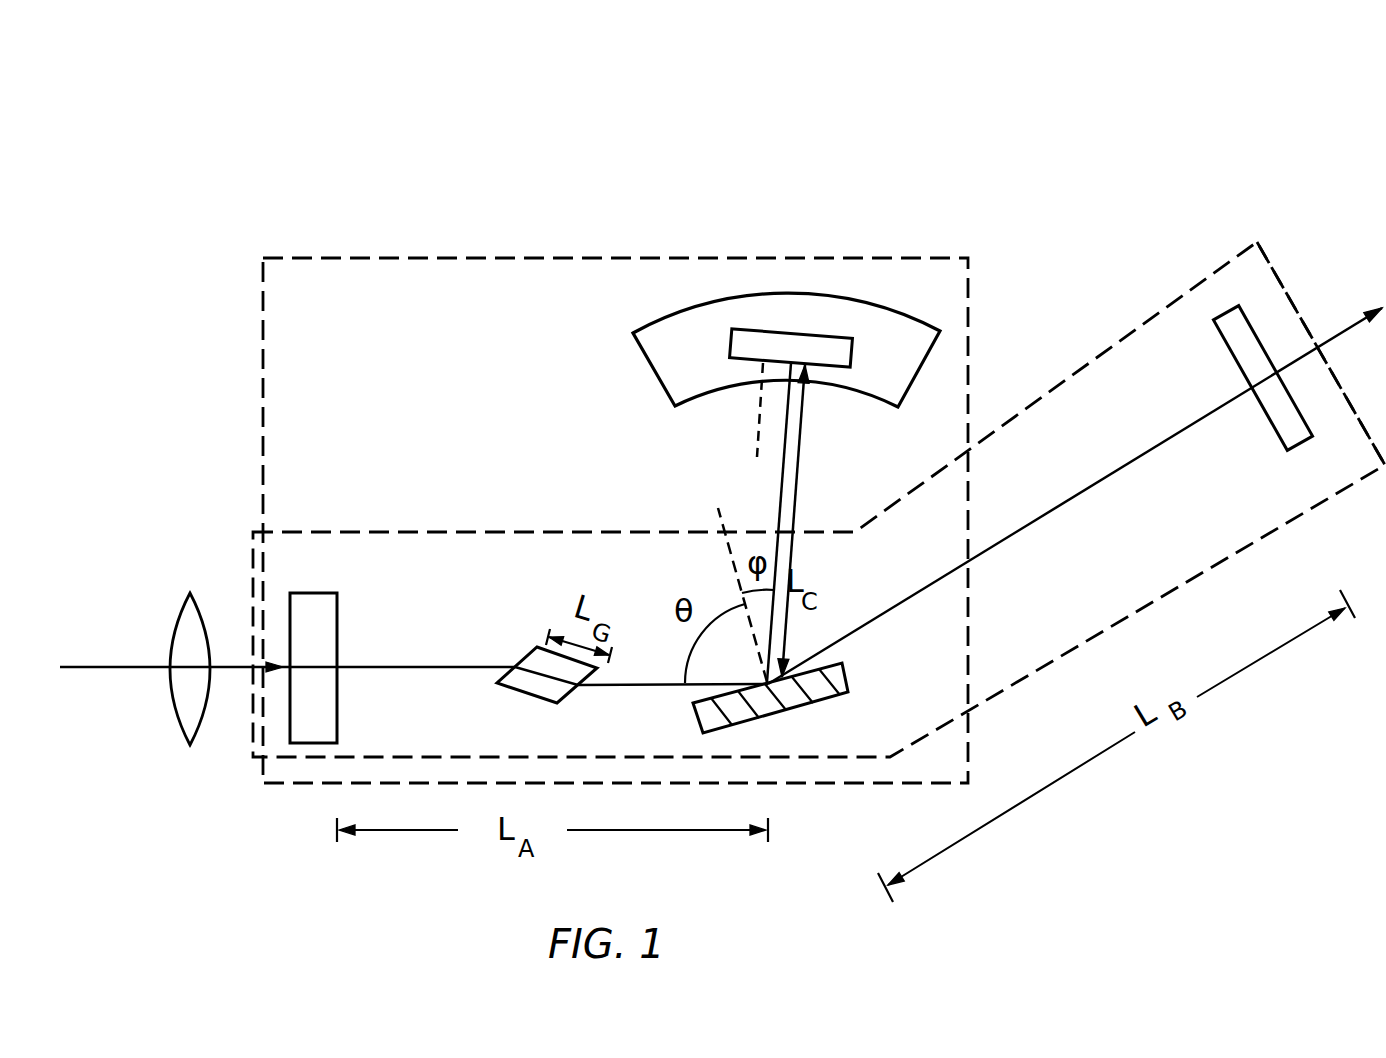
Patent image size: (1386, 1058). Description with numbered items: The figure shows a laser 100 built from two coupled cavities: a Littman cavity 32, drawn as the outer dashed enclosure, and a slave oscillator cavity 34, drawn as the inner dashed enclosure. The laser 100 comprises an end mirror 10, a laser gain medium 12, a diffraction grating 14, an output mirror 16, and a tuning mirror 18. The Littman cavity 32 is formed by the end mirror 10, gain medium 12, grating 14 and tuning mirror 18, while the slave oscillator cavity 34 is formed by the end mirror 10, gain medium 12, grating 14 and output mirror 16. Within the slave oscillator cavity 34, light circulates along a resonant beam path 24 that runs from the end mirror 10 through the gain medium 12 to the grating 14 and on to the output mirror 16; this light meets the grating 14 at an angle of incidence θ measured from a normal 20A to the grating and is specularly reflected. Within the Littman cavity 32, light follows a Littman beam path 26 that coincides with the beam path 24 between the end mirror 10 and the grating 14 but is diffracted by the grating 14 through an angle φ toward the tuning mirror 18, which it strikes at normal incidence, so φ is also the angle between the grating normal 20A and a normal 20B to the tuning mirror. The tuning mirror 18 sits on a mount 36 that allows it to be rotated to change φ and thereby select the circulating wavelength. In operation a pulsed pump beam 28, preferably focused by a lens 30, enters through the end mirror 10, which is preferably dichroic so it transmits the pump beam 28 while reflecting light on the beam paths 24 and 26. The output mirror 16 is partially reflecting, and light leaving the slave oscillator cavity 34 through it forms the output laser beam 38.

The laser 100 is at (930, 216).
The end mirror 10 is at (337, 632).
The laser gain medium 12 is at (527, 656).
The diffraction grating 14 is at (835, 700).
The output mirror 16 is at (1285, 450).
The tuning mirror 18 is at (812, 330).
The normal to grating 20A is at (731, 555).
The normal to tuning mirror 20B is at (758, 420).
The resonant beam path 24 is at (362, 669).
The Littman beam path 26 is at (777, 498).
The pulsed pump beam 28 is at (105, 668).
The lens 30 is at (178, 617).
The Littman cavity 32 is at (298, 258).
The slave oscillator cavity 34 is at (1083, 363).
The mount 36 is at (660, 320).
The output laser beam 38 is at (1340, 332).